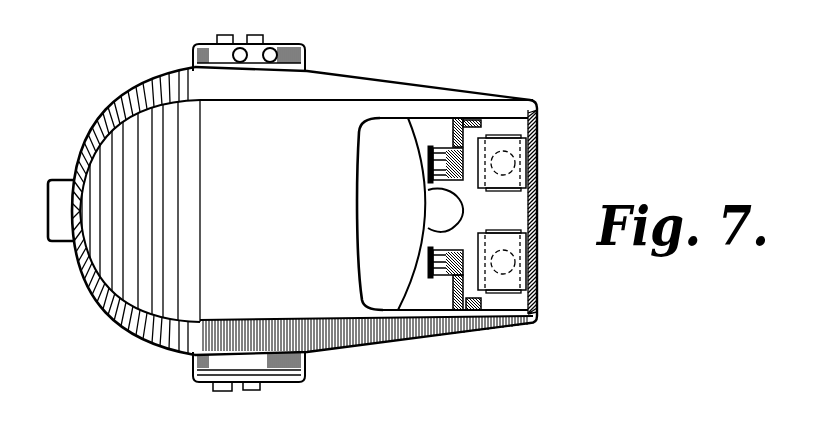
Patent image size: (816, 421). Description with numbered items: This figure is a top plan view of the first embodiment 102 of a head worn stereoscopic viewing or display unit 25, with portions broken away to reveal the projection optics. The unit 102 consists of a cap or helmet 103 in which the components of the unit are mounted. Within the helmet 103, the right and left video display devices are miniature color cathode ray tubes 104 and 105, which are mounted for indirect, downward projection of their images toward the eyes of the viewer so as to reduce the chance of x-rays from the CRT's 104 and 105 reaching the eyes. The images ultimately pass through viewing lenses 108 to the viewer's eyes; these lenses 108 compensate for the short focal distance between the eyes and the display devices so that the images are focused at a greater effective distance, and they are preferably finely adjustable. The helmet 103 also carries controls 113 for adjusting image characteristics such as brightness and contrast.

The first embodiment of head worn display unit 102 is at (137, 86).
The head worn stereoscopic viewing or display unit 25 is at (346, 72).
The cap or helmet 103 is at (418, 86).
The controls 113 is at (251, 35).
The viewing lenses 108 is at (430, 163).
The right miniature color cathode ray tube 104 is at (503, 162).
The left miniature color cathode ray tube 105 is at (505, 265).